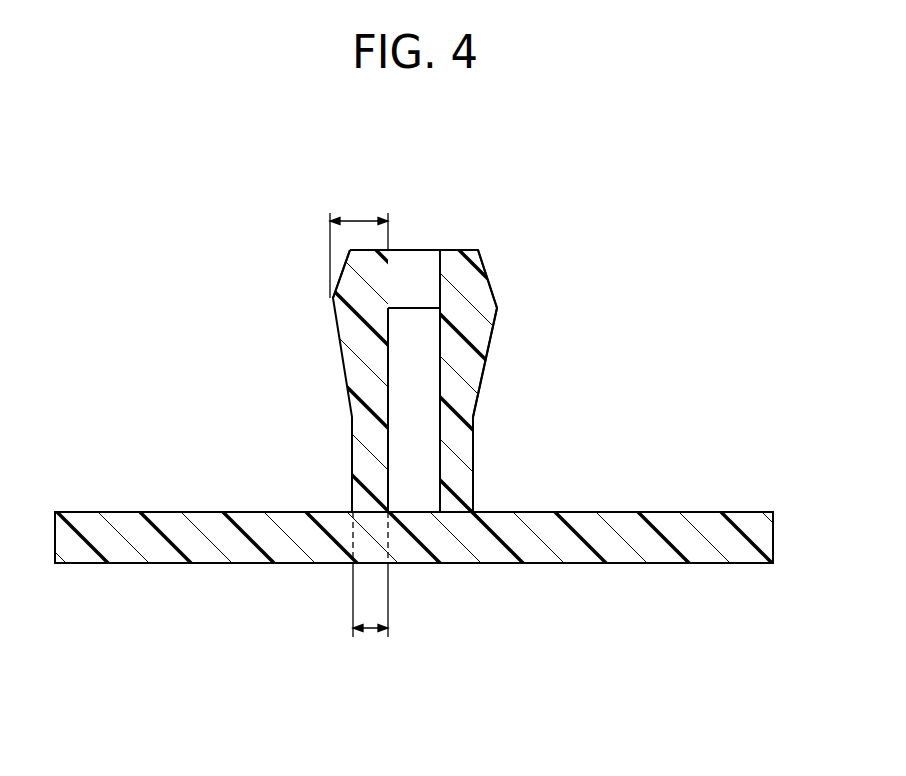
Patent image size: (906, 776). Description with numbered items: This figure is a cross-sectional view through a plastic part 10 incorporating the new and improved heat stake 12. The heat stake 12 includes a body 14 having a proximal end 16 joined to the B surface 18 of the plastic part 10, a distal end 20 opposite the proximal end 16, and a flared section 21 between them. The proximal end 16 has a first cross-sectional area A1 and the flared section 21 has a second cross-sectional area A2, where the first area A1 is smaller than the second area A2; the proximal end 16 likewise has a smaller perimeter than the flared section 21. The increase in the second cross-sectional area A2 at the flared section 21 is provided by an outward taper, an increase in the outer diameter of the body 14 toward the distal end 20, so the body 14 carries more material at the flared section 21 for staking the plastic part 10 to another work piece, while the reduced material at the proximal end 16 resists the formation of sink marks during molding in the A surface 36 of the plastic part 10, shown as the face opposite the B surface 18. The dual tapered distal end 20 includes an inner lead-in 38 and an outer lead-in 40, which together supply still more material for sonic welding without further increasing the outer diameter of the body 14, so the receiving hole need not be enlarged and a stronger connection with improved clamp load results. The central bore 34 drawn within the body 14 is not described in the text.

The plastic part 10 is at (648, 308).
The heat stake 12 is at (275, 362).
The body 14 is at (320, 420).
The proximal end 16 is at (481, 511).
The B surface 18 is at (665, 512).
The distal end 20 is at (453, 383).
The flared section 21 is at (487, 362).
The bore 34 is at (413, 445).
The A surface 36 is at (158, 563).
The inner lead-in 38 is at (442, 274).
The outer lead-in 40 is at (341, 280).
The first cross-sectional area A1 is at (370, 631).
The second cross-sectional area A2 is at (353, 217).